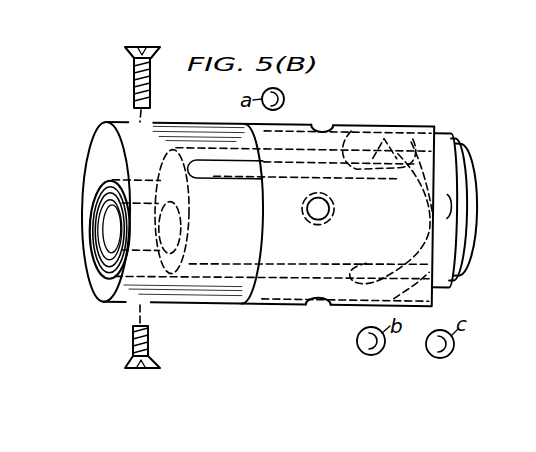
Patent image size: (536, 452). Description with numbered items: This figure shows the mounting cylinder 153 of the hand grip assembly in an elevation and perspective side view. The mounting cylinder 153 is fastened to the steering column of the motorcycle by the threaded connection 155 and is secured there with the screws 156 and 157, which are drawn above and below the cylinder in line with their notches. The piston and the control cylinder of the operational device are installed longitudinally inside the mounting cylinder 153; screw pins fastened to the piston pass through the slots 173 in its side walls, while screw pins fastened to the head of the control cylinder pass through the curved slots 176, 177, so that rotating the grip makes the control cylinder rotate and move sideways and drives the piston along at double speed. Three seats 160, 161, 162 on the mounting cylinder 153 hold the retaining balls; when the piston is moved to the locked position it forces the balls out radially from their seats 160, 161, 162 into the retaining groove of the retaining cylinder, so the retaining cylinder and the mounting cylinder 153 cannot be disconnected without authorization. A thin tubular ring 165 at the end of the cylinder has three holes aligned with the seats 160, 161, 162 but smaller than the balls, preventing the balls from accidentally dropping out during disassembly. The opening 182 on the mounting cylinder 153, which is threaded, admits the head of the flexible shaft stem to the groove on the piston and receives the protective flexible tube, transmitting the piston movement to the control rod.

The mounting cylinder 153 is at (100, 134).
The threaded connection 155 is at (120, 208).
The screw 156 is at (147, 39).
The screw 157 is at (143, 369).
The seat 160 is at (322, 129).
The seat 161 is at (316, 218).
The seat 162 is at (320, 303).
The thin tubular ring 165 is at (431, 127).
The slot 173 is at (348, 267).
The curved slot 176 is at (375, 143).
The curved slot 177 is at (435, 252).
The opening 182 is at (118, 239).